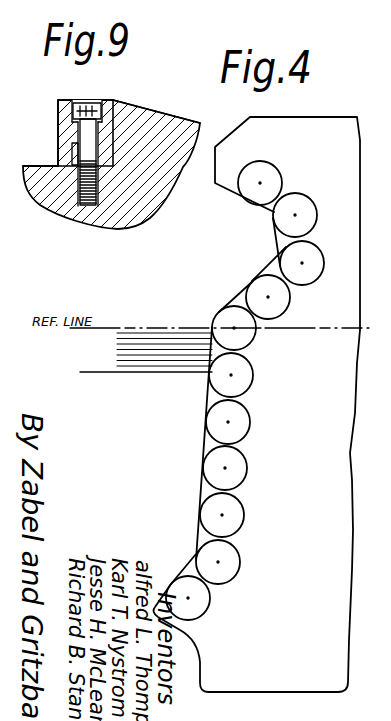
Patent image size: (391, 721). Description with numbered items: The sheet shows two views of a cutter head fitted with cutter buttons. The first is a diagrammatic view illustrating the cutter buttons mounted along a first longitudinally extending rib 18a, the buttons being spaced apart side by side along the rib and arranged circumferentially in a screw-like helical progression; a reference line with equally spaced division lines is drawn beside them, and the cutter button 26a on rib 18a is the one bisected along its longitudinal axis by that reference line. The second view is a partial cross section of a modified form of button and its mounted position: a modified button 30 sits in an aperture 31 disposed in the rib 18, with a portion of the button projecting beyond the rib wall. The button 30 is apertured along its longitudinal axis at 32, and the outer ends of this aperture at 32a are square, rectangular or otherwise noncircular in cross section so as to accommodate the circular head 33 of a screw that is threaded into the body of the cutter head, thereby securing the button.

In FIG. 9, the rib 18 is at (179, 117).
In FIG. 4, the rib 18a is at (257, 404).
In FIG. 4, the cutter button 26a is at (243, 347).
In FIG. 9, the modified button 30 is at (62, 100).
In FIG. 9, the aperture 31 is at (71, 209).
In FIG. 9, the aperture 32 is at (135, 113).
In FIG. 9, the outer ends of aperture 32a is at (97, 100).
In FIG. 9, the circular head 33 is at (76, 100).